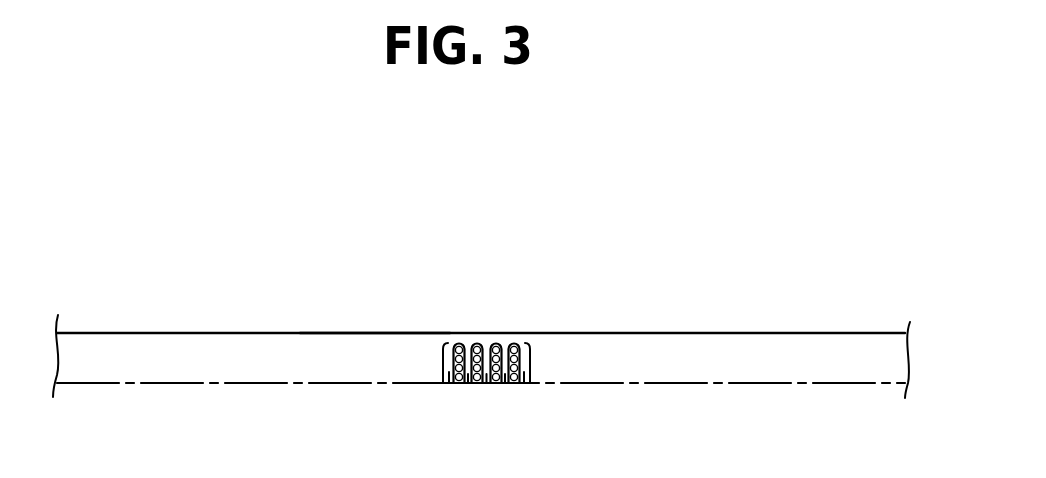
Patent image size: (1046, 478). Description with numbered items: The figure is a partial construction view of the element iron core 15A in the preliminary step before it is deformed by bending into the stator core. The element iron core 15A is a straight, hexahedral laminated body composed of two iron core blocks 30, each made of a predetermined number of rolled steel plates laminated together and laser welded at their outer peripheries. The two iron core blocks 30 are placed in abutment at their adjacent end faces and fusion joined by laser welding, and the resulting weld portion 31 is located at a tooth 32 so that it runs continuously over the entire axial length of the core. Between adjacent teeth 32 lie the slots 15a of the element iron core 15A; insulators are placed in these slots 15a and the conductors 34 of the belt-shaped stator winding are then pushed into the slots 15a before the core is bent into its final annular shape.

The iron core block 30 is at (311, 350).
The element iron core 15A is at (378, 337).
The slot 15a is at (459, 343).
The weld portion 31 is at (498, 318).
The conductor 34 is at (515, 343).
The tooth 32 is at (452, 378).